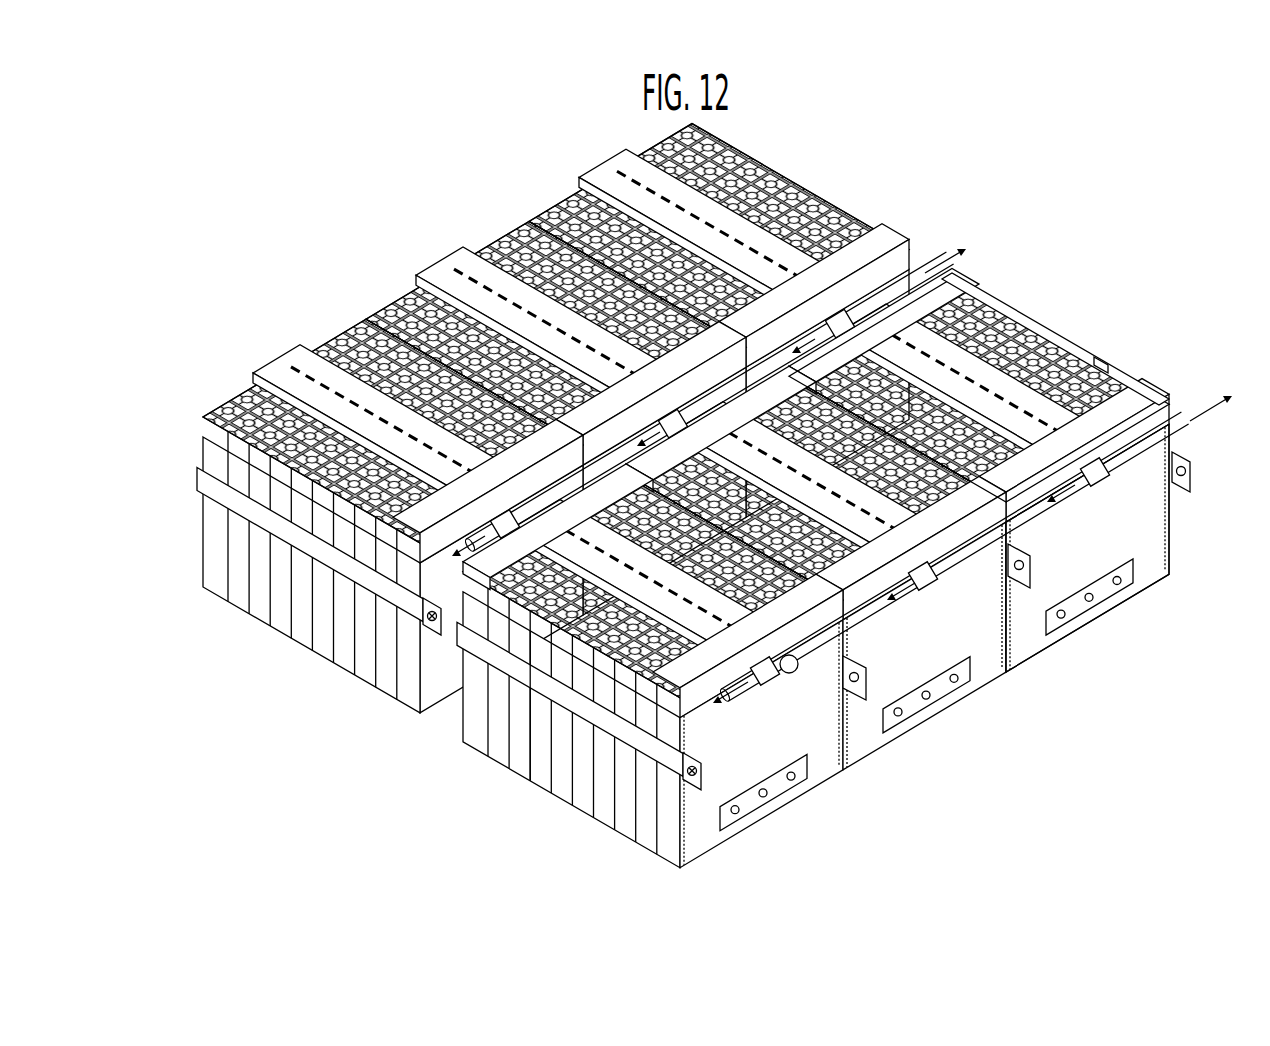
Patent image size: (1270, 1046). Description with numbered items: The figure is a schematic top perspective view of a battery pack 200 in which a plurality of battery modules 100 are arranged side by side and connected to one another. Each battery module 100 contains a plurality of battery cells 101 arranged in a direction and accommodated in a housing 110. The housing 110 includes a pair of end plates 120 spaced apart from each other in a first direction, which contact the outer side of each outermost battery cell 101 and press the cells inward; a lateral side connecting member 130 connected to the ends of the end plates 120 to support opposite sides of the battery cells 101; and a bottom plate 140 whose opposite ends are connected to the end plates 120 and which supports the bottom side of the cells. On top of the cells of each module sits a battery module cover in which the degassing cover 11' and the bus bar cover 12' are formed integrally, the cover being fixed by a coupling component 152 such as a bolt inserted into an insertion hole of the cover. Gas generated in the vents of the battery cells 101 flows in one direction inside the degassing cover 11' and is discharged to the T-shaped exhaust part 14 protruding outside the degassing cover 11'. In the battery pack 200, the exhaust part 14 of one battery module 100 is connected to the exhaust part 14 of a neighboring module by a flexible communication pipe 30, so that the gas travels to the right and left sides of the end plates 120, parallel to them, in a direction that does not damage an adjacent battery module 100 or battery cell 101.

The battery pack 200 is at (1034, 206).
The battery module 100 is at (438, 262).
The battery cell 101 is at (520, 762).
The degassing cover 11' is at (979, 378).
The bus bar cover 12' is at (1065, 339).
The coupling component 152 is at (1100, 360).
The T-shaped exhaust part 14 is at (1107, 477).
The flexible communication pipe 30 is at (1030, 503).
The housing 110 is at (1120, 660).
The end plate 120 is at (1150, 557).
The lateral side connecting member 130 is at (1190, 477).
The bottom plate 140 is at (1113, 590).